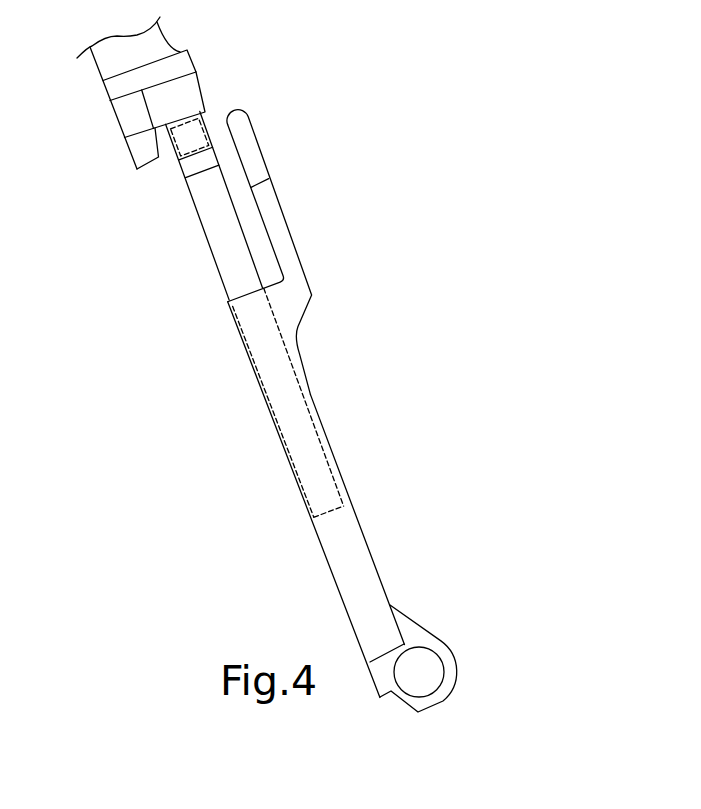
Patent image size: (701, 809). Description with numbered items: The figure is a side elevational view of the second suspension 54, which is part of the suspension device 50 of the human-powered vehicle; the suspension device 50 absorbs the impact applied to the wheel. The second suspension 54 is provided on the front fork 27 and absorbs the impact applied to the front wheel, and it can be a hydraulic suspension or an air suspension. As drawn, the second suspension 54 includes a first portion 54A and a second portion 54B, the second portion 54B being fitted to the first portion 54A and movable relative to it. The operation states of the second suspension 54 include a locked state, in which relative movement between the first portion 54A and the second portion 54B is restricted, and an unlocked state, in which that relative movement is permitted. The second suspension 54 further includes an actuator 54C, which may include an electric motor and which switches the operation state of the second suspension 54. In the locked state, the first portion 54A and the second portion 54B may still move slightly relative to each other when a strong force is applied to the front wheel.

The suspension device 50 is at (421, 75).
The second suspension 54 is at (348, 113).
The first portion 54A is at (224, 203).
The second portion 54B is at (211, 133).
The actuator 54C is at (190, 137).
The front fork 27 is at (360, 554).